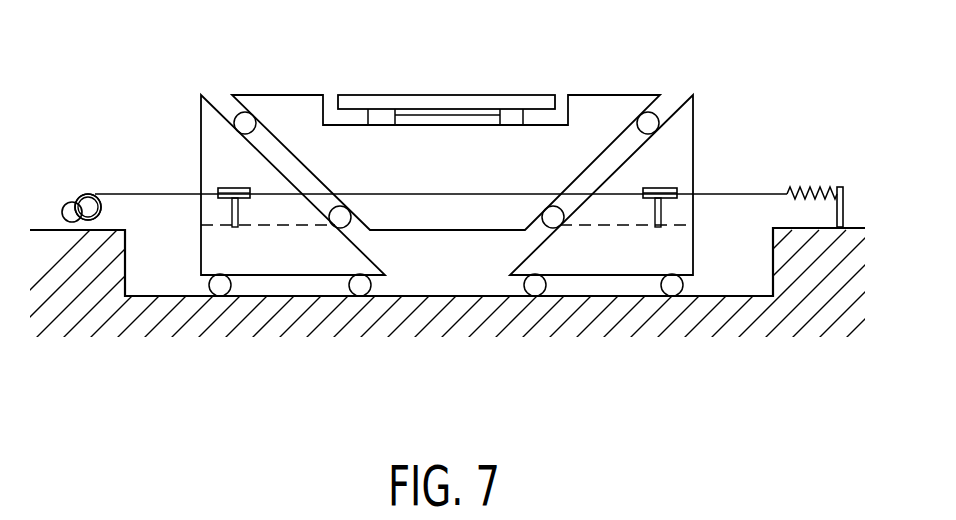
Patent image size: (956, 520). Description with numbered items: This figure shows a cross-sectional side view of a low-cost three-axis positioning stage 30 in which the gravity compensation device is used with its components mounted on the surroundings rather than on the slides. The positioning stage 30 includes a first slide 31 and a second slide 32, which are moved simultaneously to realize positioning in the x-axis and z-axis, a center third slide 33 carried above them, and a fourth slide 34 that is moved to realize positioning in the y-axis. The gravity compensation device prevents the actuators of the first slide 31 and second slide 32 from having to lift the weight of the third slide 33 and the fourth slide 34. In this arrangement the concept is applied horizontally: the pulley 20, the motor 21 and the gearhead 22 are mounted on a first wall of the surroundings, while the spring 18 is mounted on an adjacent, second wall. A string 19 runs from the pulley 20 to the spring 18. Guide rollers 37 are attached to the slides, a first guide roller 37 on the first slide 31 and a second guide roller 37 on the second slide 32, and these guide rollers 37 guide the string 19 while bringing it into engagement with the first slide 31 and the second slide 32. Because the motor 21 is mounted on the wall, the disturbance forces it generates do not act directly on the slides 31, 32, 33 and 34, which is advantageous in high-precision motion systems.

The spring 18 is at (825, 188).
The string 19 is at (440, 197).
The pulley 20 is at (93, 194).
The motor 21 is at (71, 203).
The gearhead 22 is at (88, 207).
The positioning stage 30 is at (151, 367).
The first slide 31 is at (218, 155).
The second slide 32 is at (672, 142).
The third slide 33 is at (508, 153).
The fourth slide 34 is at (450, 103).
The guide rollers 37 is at (227, 212).